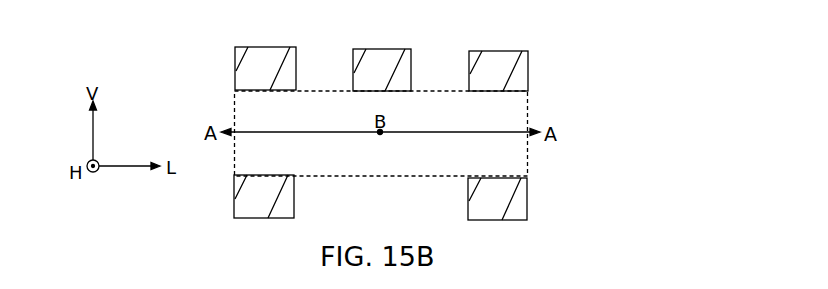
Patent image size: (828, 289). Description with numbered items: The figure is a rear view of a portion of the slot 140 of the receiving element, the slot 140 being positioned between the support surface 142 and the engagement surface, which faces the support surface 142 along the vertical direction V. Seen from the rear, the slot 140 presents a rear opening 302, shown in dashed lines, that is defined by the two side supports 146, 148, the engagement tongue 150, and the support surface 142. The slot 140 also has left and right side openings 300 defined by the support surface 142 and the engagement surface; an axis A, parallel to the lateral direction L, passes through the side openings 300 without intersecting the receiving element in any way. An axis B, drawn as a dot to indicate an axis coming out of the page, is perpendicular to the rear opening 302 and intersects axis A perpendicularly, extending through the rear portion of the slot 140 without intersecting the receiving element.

The slot 140 is at (393, 165).
The support surface 142 is at (238, 198).
The side support 146 is at (525, 62).
The side support 148 is at (238, 73).
The engagement tongue 150 is at (396, 58).
The side opening 300 is at (527, 111).
The rear opening 302 is at (509, 147).